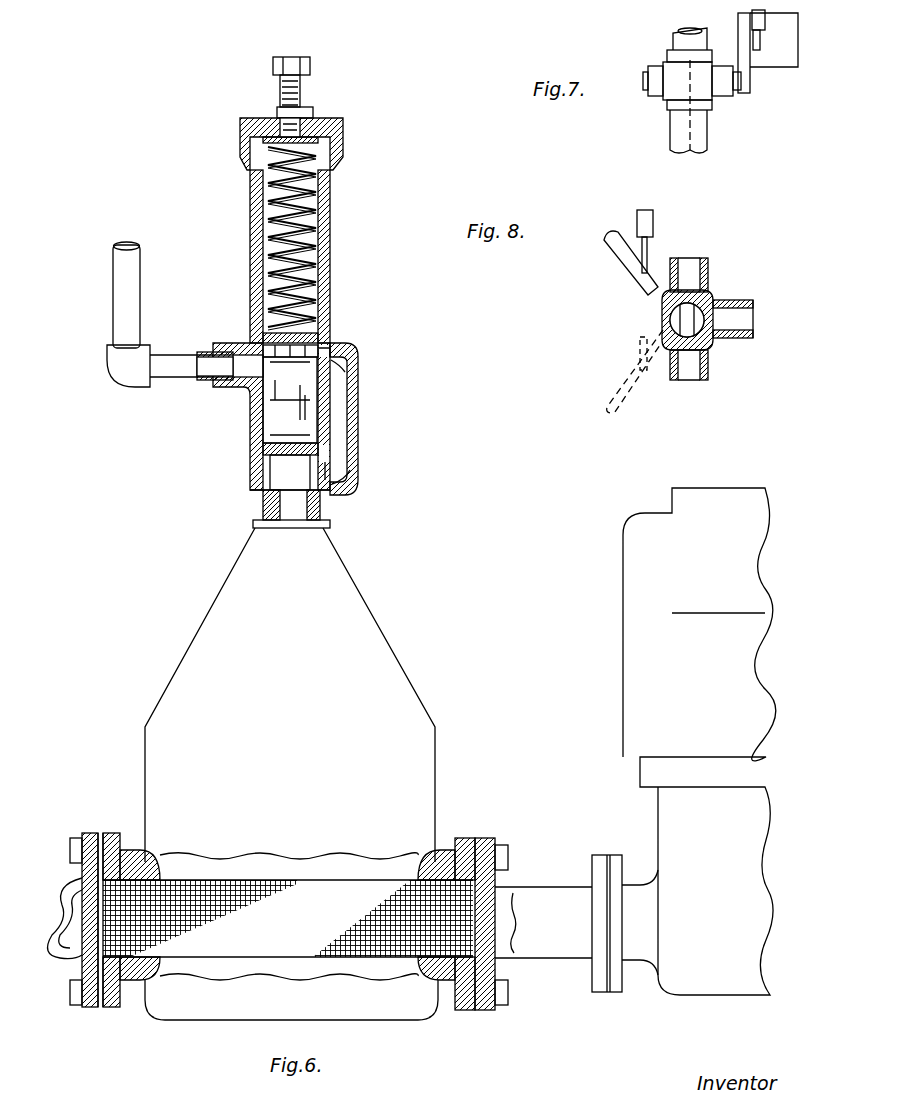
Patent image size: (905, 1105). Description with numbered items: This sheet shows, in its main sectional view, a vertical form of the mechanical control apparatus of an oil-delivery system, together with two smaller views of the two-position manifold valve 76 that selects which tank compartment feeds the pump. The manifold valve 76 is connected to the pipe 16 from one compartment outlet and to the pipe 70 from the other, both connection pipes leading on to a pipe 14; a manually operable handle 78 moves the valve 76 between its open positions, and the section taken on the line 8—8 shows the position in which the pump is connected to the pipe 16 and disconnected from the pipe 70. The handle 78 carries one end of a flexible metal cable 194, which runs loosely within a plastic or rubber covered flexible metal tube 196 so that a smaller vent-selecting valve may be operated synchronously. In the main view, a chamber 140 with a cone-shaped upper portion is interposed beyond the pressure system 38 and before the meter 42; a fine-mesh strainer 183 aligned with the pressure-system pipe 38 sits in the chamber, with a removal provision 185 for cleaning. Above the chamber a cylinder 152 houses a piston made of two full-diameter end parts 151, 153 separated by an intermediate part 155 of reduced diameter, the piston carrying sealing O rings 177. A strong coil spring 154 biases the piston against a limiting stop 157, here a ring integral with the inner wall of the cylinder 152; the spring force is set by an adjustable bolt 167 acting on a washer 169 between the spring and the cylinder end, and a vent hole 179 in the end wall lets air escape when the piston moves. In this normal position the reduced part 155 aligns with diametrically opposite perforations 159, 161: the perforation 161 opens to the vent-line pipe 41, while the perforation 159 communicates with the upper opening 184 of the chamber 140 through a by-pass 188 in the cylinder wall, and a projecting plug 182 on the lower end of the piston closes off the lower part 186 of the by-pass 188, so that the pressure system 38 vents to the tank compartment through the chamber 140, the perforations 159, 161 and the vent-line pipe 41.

In FIG. 7, the pipe 14 is at (705, 130).
In FIG. 8, the pipe 14 is at (710, 368).
In FIG. 7, the pipe 16 is at (675, 45).
In FIG. 8, the pipe 16 is at (708, 270).
In FIG. 6, the pressure system 38 is at (50, 885).
In FIG. 6, the vent-line pipe 41 is at (172, 375).
In FIG. 6, the meter 42 is at (623, 552).
In FIG. 8, the pipe 70 is at (740, 300).
In FIG. 7, the two-position manifold valve 76 is at (665, 100).
In FIG. 8, the two-position manifold valve 76 is at (668, 320).
In FIG. 7, the handle 78 is at (738, 25).
In FIG. 8, the handle 78 is at (625, 260).
In FIG. 7, the delivery hose 8 is at (665, 162).
In FIG. 6, the chamber 140 is at (395, 672).
In FIG. 6, the piston end part 151 is at (280, 420).
In FIG. 6, the cylinder 152 is at (332, 215).
In FIG. 6, the piston end part 153 is at (265, 335).
In FIG. 6, the coil spring 154 is at (316, 255).
In FIG. 6, the piston part of reduced diameter 155 is at (285, 372).
In FIG. 6, the limiting stop 157 is at (330, 452).
In FIG. 6, the perforation 159 is at (345, 360).
In FIG. 6, the perforation 161 is at (255, 355).
In FIG. 6, the adjustable bolt 167 is at (276, 64).
In FIG. 6, the washer 169 is at (320, 118).
In FIG. 6, the sealing O rings 177 is at (340, 350).
In FIG. 6, the vent hole 179 is at (270, 137).
In FIG. 6, the projecting plug 182 is at (262, 498).
In FIG. 6, the fine-mesh strainer 183 is at (435, 955).
In FIG. 6, the upper opening 184 is at (320, 526).
In FIG. 6, the removal provision 185 is at (100, 1008).
In FIG. 6, the lower part of by-pass 186 is at (330, 470).
In FIG. 6, the by-pass 188 is at (355, 412).
In FIG. 7, the flexible metal cable 194 is at (757, 45).
In FIG. 8, the flexible metal cable 194 is at (650, 250).
In FIG. 7, the flexible metal tube 196 is at (758, 25).
In FIG. 8, the flexible metal tube 196 is at (655, 215).